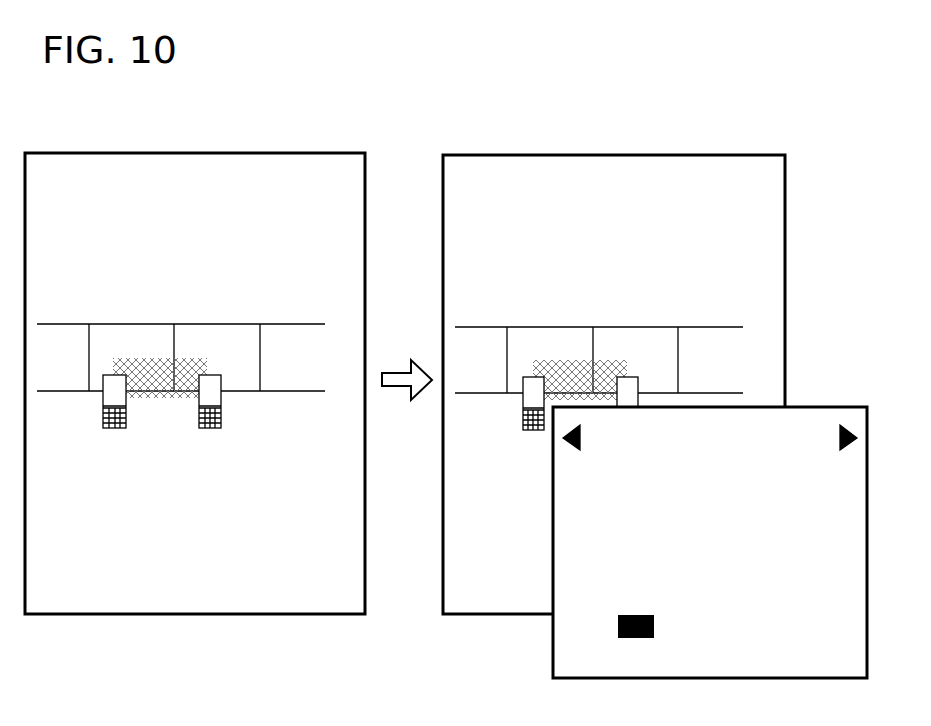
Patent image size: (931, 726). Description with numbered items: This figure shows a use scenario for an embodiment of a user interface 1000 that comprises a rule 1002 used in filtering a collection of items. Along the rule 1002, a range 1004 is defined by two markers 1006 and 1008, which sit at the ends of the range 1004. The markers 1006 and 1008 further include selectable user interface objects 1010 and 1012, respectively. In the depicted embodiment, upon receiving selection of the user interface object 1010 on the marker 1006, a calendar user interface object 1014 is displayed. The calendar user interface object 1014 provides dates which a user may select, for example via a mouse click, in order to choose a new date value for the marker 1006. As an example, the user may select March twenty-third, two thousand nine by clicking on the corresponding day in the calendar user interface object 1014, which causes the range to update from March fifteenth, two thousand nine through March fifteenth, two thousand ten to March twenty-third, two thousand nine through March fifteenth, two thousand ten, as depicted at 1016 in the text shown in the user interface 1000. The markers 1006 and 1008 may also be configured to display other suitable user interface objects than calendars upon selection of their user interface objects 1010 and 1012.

The user interface 1000 is at (247, 153).
The rule 1002 is at (232, 316).
The range 1004 is at (135, 372).
The marker 1006 is at (103, 395).
The marker 1008 is at (222, 394).
The selectable user interface object 1010 is at (107, 428).
The selectable user interface object 1012 is at (201, 428).
The calendar user interface object 1014 is at (552, 647).
The updated range 1016 is at (550, 214).